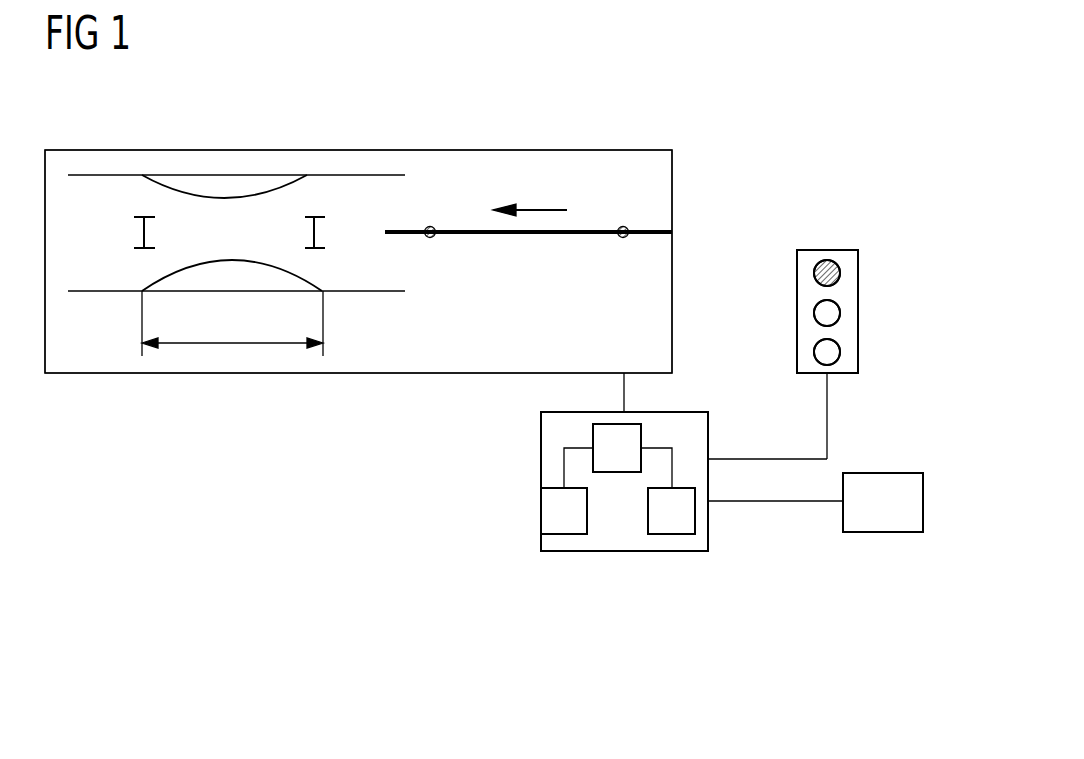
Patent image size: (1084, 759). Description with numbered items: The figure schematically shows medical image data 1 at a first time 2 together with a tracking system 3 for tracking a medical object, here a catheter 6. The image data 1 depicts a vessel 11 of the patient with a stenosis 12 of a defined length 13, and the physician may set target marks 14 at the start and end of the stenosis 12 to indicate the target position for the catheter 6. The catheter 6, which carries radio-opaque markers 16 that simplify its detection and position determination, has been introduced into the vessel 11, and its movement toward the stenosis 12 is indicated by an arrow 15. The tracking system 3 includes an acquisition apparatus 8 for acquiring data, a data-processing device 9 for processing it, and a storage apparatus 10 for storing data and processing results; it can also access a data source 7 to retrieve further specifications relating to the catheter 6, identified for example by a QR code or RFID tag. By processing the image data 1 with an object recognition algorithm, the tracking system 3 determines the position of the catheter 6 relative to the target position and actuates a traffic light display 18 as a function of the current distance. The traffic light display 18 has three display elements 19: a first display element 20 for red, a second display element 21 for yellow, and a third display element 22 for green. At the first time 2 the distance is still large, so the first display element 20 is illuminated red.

The medical image data 1 is at (405, 150).
The first time 2 is at (358, 261).
The tracking system 3 is at (541, 447).
The catheter 6 is at (650, 232).
The data source 7 is at (884, 532).
The acquisition apparatus 8 is at (565, 534).
The data-processing device 9 is at (617, 472).
The storage apparatus 10 is at (672, 534).
The vessel 11 is at (101, 175).
The stenosis 12 is at (228, 277).
The length 13 is at (223, 345).
The target marks 14 is at (150, 232).
The arrow 15 is at (537, 210).
The radio-opaque markers 16 is at (430, 226).
The traffic light display 18 is at (829, 250).
The display elements 19 is at (827, 312).
The first display element 20 is at (840, 275).
The second display element 21 is at (840, 315).
The third display element 22 is at (840, 354).